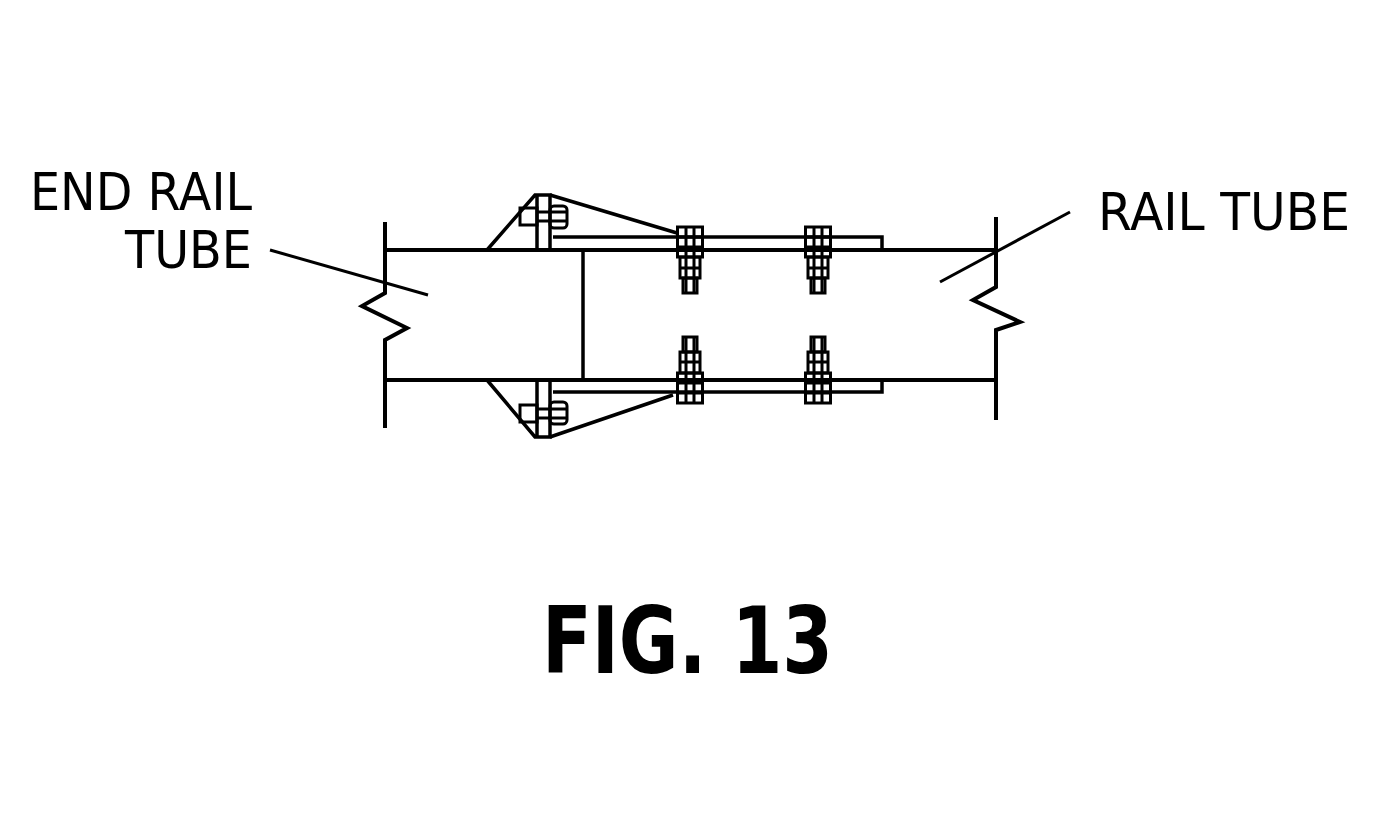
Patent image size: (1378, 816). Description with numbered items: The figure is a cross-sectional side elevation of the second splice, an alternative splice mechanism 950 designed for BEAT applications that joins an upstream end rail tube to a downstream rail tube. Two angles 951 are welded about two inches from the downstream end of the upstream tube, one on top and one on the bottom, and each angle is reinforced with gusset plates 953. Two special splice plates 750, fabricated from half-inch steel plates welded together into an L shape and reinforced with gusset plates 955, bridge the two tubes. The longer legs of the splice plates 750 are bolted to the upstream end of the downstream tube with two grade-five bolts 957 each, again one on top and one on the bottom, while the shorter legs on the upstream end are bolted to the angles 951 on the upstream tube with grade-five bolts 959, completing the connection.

The splice mechanism 950 is at (698, 118).
The angles 951 is at (523, 217).
The gusset plates 953 is at (513, 237).
The gusset plates 955 is at (587, 222).
The bolts 957 is at (690, 227).
The bolts 959 is at (568, 407).
The splice plates 750 is at (860, 232).